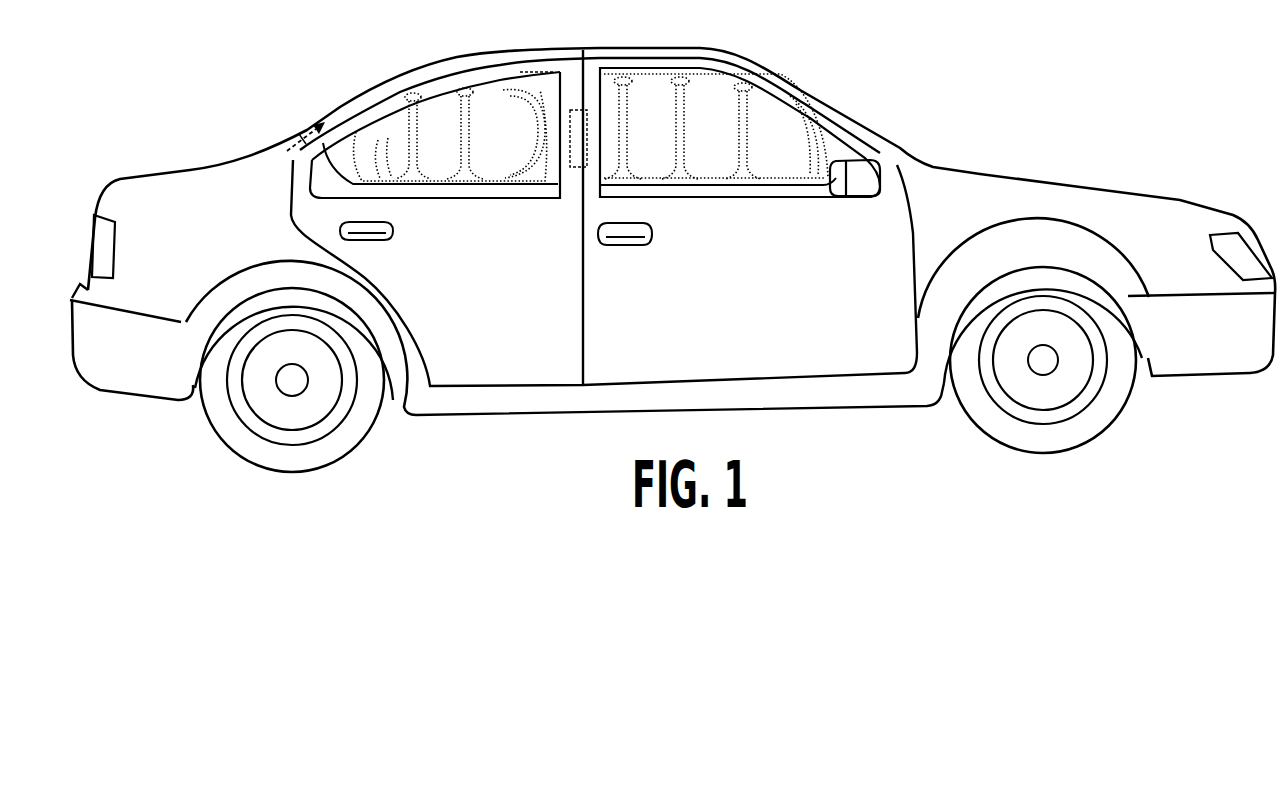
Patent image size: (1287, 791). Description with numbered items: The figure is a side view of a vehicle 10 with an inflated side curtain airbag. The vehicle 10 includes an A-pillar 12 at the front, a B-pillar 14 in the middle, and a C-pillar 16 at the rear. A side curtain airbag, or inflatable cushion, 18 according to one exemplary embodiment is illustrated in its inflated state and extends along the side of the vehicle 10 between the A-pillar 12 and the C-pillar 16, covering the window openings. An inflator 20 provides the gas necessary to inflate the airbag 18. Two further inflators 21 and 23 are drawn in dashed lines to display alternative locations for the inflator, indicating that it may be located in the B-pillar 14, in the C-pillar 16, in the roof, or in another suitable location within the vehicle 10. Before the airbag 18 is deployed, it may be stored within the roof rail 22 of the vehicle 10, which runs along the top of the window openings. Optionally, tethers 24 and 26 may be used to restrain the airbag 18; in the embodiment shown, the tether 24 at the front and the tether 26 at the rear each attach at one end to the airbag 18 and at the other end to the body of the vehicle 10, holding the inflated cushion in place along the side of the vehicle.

The vehicle 10 is at (951, 56).
The A-pillar 12 is at (858, 125).
The B-pillar 14 is at (580, 93).
The C-pillar 16 is at (362, 90).
The side curtain airbag 18 is at (703, 112).
The inflator 20 is at (568, 133).
The inflator 21 is at (573, 47).
The roof rail 22 is at (627, 56).
The inflator 23 is at (305, 120).
The tether 24 is at (820, 185).
The tether 26 is at (347, 150).